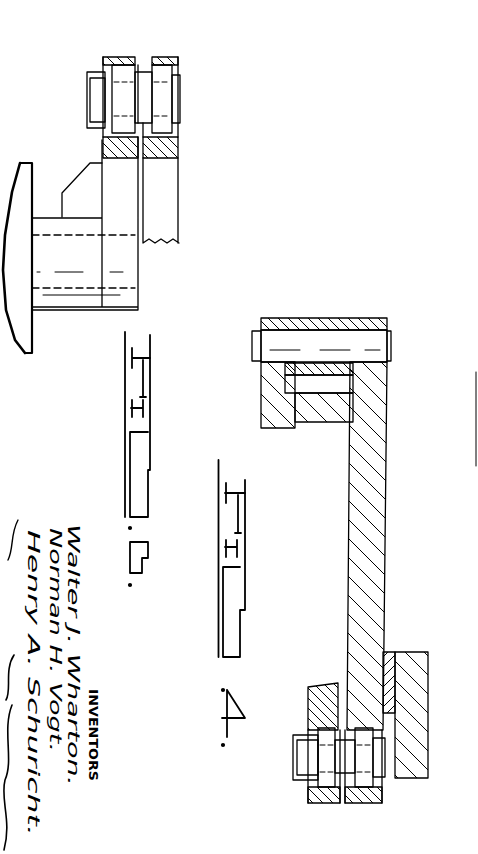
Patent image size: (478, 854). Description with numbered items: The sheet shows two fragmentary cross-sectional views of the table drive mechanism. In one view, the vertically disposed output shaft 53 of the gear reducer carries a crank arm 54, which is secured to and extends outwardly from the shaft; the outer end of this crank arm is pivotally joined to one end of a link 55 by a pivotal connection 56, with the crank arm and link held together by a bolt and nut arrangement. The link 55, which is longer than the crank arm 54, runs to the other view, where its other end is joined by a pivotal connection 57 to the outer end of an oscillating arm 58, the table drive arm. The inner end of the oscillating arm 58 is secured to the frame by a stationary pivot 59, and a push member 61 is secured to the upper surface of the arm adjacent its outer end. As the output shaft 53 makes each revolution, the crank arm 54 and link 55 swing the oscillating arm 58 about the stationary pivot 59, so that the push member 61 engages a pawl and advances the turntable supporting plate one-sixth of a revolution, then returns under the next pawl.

In FIG. 5, the output shaft 53 is at (123, 263).
In FIG. 5, the crank arm 54 is at (118, 180).
In FIG. 5, the link 55 is at (167, 183).
In FIG. 4, the link 55 is at (320, 687).
In FIG. 5, the pivotal connection 56 is at (178, 93).
In FIG. 4, the pivotal connection 57 is at (305, 767).
In FIG. 4, the oscillating arm 58 is at (385, 557).
In FIG. 4, the stationary pivot 59 is at (360, 355).
In FIG. 4, the push member 61 is at (425, 740).